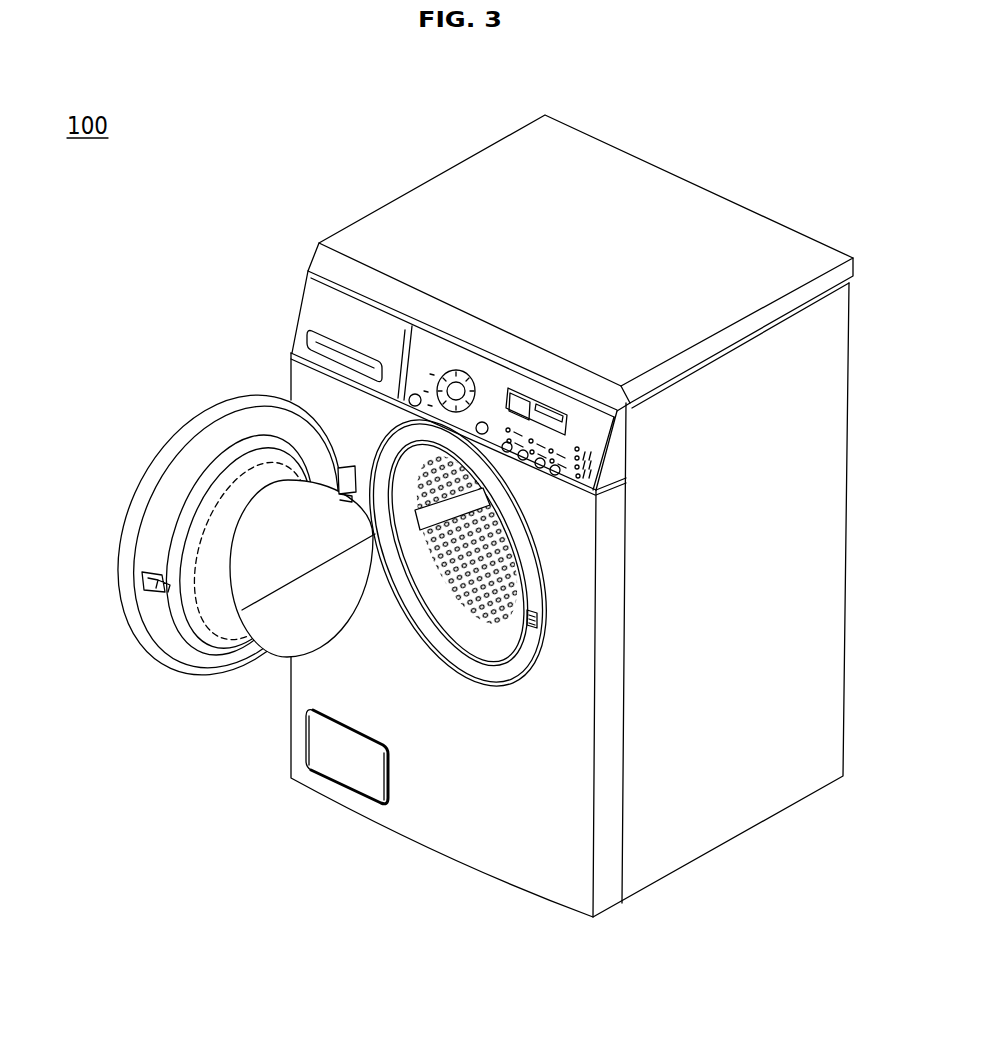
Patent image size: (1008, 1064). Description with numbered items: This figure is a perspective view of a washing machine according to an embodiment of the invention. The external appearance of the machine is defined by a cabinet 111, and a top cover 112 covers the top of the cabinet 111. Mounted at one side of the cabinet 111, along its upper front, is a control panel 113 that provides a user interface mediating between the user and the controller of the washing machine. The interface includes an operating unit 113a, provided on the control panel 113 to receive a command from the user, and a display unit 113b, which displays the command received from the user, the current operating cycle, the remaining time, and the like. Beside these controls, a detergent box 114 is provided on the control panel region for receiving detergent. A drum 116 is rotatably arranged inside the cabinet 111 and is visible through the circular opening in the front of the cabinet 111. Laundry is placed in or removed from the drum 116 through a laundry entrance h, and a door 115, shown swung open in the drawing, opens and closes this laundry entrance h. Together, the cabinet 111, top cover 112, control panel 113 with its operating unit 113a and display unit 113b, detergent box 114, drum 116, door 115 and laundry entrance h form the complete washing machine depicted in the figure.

The cabinet 111 is at (707, 830).
The top cover 112 is at (480, 188).
The control panel 113 is at (423, 347).
The operating unit 113a is at (481, 421).
The display unit 113b is at (547, 408).
The detergent box 114 is at (315, 308).
The door 115 is at (125, 598).
The drum 116 is at (512, 563).
The laundry entrance h is at (433, 603).